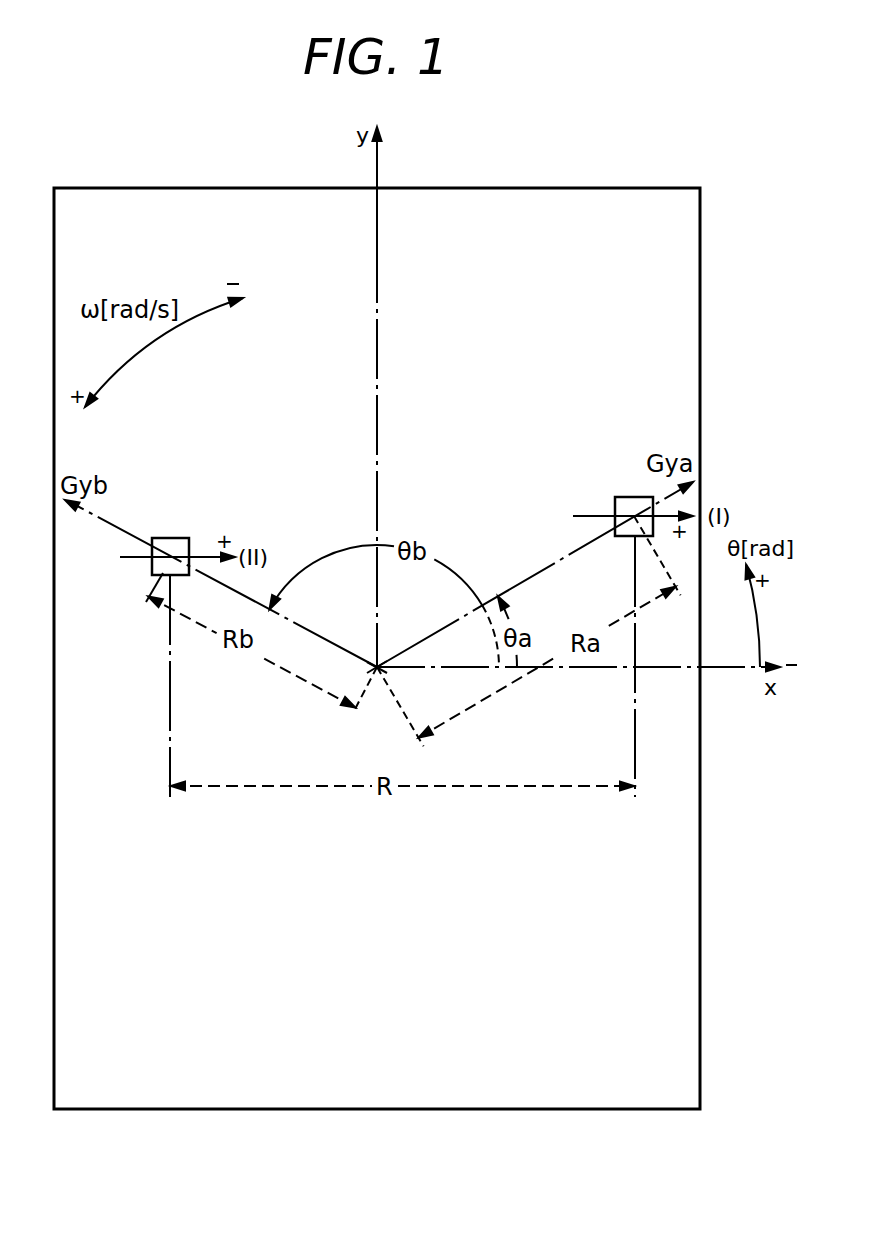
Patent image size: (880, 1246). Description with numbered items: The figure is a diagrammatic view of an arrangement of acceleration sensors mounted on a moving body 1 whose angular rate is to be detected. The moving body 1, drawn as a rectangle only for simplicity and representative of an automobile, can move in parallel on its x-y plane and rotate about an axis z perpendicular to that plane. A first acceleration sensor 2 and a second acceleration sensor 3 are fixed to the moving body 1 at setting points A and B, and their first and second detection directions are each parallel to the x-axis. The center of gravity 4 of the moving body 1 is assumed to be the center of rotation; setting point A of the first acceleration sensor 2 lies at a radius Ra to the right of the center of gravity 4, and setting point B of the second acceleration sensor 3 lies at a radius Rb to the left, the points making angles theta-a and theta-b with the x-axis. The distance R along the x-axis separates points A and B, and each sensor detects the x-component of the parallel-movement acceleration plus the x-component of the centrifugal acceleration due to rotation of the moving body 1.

The moving body 1 is at (647, 188).
The first acceleration sensor 2 is at (622, 497).
The second acceleration sensor 3 is at (183, 537).
The center of gravity 4 is at (372, 669).